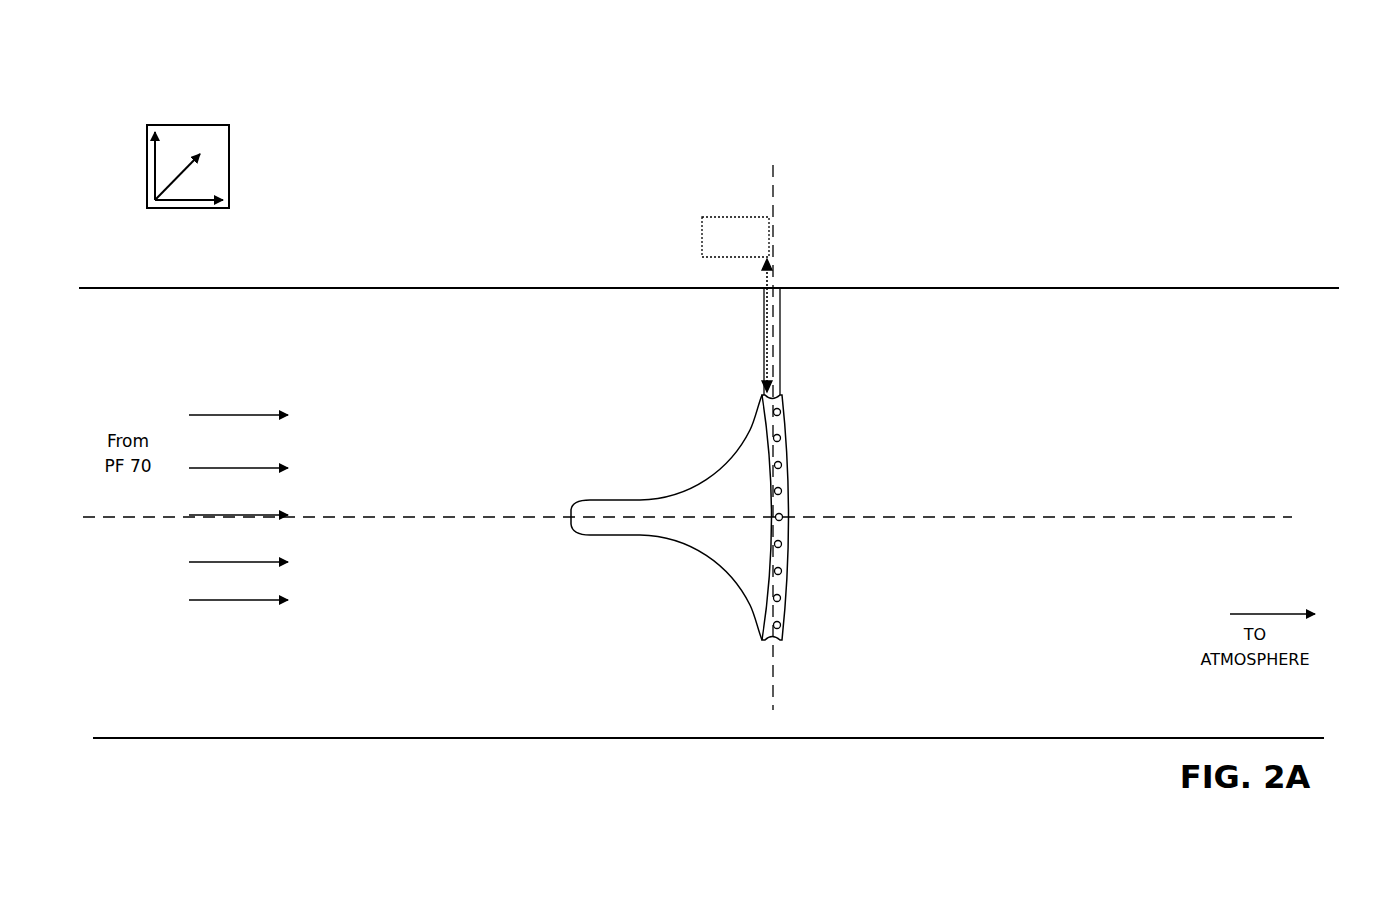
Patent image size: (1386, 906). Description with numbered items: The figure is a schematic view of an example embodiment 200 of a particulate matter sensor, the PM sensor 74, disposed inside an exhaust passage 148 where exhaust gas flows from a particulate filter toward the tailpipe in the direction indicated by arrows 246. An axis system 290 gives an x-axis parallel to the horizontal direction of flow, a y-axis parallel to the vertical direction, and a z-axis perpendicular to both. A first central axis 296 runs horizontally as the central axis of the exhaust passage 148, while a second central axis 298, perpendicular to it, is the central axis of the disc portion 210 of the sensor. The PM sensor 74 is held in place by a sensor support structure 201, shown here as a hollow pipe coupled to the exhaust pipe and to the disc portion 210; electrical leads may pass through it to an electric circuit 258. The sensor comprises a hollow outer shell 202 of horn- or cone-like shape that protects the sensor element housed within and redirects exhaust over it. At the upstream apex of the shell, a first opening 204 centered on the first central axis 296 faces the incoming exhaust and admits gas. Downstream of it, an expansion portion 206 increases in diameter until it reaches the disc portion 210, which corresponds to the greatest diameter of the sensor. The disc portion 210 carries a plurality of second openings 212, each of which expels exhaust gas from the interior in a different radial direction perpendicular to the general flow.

The embodiment 200 is at (709, 385).
The axis system 290 is at (229, 142).
The second central axis 298 is at (773, 180).
The electric circuit 258 is at (737, 304).
The exhaust passage 148 is at (1268, 288).
The sensor support structure 201 is at (780, 352).
The disc portion 210 is at (773, 504).
The second opening 212 is at (788, 460).
The outer shell 202 is at (650, 517).
The expansion portion 206 is at (718, 481).
The first opening 204 is at (570, 514).
The arrows 246 is at (232, 468).
The PM sensor 74 is at (684, 464).
The first central axis 296 is at (1245, 517).